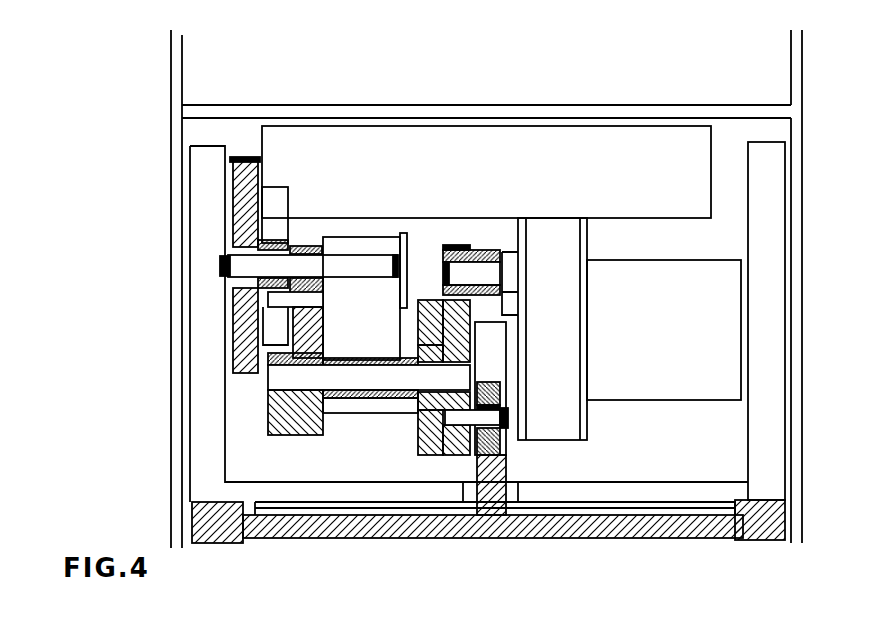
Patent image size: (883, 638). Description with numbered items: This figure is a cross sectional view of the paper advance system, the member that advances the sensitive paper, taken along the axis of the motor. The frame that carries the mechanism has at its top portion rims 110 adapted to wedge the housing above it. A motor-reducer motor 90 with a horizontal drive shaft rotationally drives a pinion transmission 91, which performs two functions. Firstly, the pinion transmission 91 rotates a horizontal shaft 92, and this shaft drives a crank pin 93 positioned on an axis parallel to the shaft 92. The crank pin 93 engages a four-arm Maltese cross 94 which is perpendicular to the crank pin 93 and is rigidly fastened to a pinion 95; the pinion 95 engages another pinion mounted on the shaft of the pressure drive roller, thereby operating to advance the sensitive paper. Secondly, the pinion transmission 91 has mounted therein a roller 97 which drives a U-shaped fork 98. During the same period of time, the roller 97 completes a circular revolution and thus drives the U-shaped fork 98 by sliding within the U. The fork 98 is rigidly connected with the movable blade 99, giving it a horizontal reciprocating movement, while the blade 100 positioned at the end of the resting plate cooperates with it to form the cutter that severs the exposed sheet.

The motor-reducer motor 90 is at (725, 300).
The pinion transmission 91 is at (457, 245).
The horizontal shaft 92 is at (355, 382).
The crank pin 93 is at (275, 297).
The four-arm Maltese cross 94 is at (275, 217).
The pinion 95 is at (248, 160).
The roller 97 is at (490, 450).
The U-shaped fork 98 is at (488, 328).
The movable blade 99 is at (566, 525).
The stationary blade 100 is at (407, 492).
The rims 110 is at (795, 62).